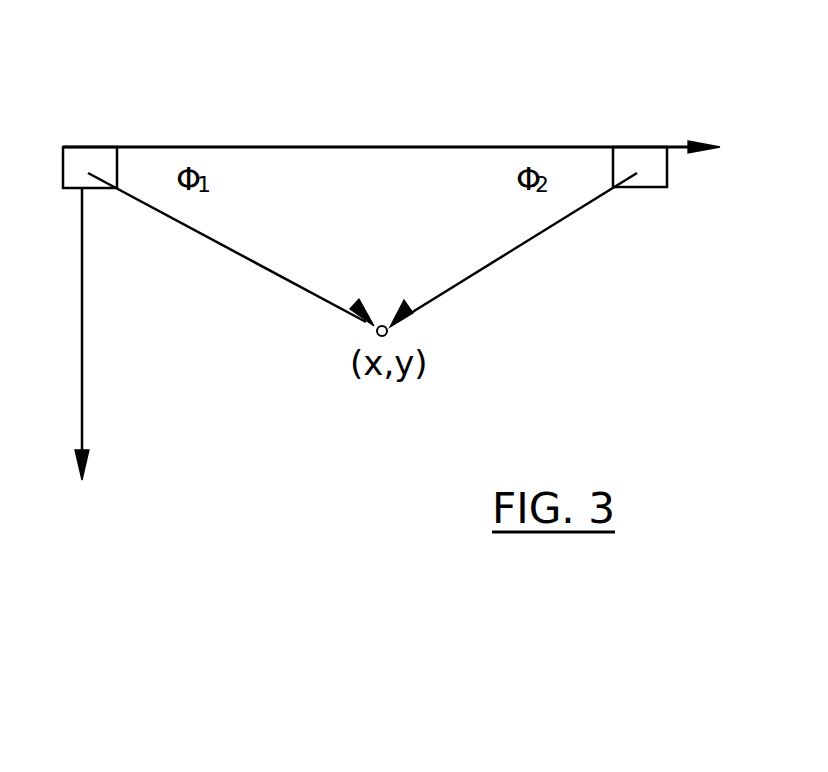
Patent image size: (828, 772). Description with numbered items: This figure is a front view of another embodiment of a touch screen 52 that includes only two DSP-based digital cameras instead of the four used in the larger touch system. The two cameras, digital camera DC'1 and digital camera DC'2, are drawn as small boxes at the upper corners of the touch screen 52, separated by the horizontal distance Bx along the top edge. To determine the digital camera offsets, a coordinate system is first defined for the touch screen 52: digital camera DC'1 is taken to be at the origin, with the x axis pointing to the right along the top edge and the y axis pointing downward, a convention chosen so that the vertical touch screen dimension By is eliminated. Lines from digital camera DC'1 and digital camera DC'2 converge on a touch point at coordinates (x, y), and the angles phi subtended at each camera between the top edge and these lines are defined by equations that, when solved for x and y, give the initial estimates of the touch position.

The touch screen 52 is at (497, 108).
The first digital camera 1 is at (97, 156).
The second digital camera 2 is at (540, 192).